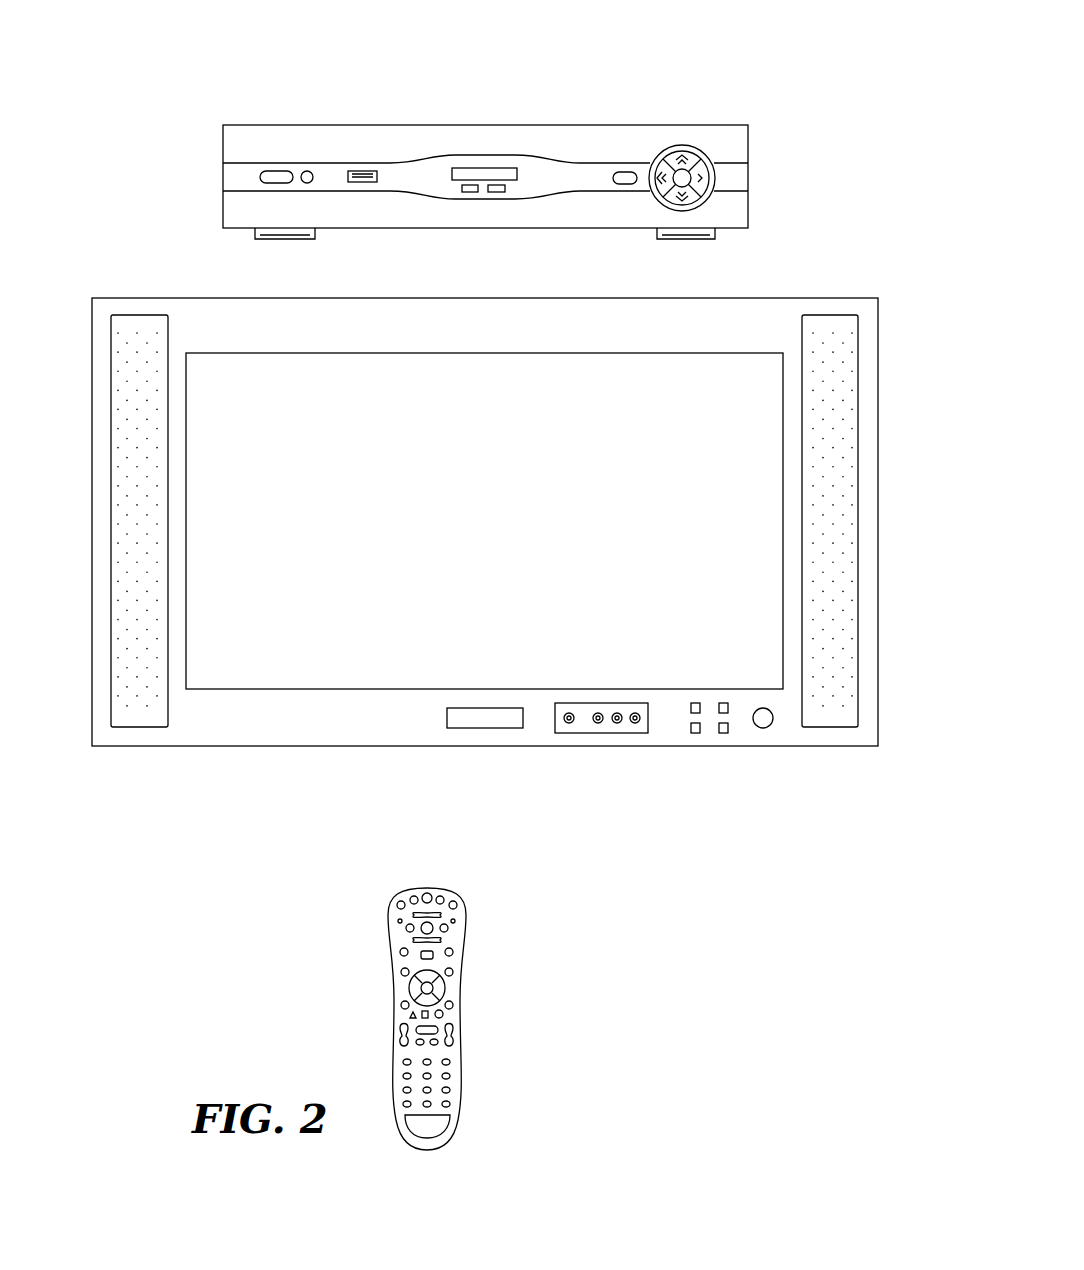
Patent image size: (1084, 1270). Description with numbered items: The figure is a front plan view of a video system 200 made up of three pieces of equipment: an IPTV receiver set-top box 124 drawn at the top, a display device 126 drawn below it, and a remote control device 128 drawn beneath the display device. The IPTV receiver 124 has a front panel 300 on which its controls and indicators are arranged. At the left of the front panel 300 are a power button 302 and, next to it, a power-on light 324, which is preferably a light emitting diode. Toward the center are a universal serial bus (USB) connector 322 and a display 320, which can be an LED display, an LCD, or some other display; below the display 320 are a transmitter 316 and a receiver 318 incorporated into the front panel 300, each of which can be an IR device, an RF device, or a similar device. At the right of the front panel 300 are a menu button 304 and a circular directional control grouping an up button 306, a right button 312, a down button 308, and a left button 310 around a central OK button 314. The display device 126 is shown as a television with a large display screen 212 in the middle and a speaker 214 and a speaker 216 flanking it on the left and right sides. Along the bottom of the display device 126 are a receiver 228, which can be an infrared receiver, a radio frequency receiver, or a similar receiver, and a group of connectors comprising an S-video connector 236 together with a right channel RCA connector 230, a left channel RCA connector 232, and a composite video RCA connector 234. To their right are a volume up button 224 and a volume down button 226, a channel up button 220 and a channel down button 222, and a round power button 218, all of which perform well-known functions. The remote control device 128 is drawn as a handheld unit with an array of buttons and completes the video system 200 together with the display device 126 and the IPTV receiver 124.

The video system 200 is at (855, 117).
The IPTV receiver set-top box 124 is at (427, 128).
The front panel 300 is at (235, 133).
The power button 302 is at (260, 175).
The power-on light 324 is at (303, 179).
The universal serial bus (USB) connector 322 is at (357, 175).
The display 320 is at (487, 175).
The transmitter 316 is at (468, 188).
The receiver 318 is at (502, 187).
The menu button 304 is at (632, 174).
The up button 306 is at (688, 155).
The right button 312 is at (703, 163).
The OK button 314 is at (688, 178).
The down button 308 is at (692, 197).
The left button 310 is at (667, 190).
The display device 126 is at (276, 298).
The display screen 212 is at (313, 667).
The speaker 214 is at (133, 717).
The speaker 216 is at (825, 718).
The power button 218 is at (767, 722).
The channel up button 220 is at (725, 712).
The channel down button 222 is at (725, 728).
The volume up button 224 is at (692, 712).
The volume down button 226 is at (692, 728).
The receiver 228 is at (452, 718).
The right channel RCA connector 230 is at (633, 722).
The left channel RCA connector 232 is at (615, 722).
The composite video RCA connector 234 is at (593, 722).
The S-video connector 236 is at (563, 722).
The remote control device 128 is at (463, 1080).